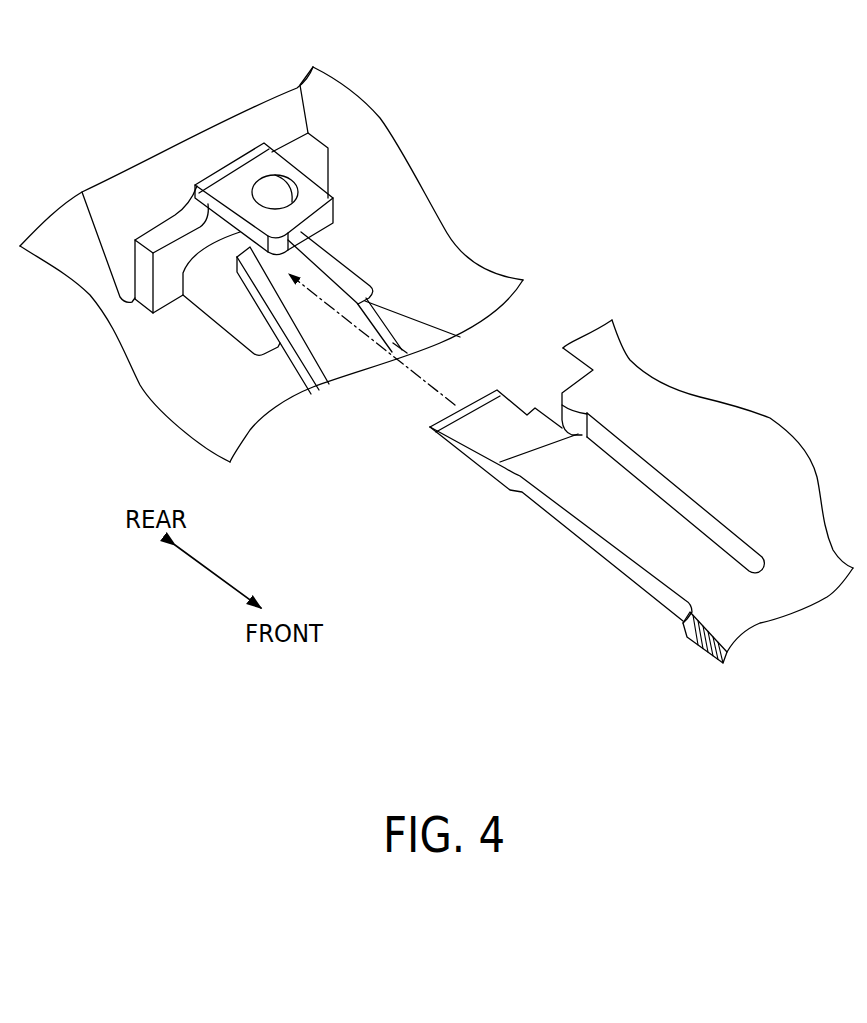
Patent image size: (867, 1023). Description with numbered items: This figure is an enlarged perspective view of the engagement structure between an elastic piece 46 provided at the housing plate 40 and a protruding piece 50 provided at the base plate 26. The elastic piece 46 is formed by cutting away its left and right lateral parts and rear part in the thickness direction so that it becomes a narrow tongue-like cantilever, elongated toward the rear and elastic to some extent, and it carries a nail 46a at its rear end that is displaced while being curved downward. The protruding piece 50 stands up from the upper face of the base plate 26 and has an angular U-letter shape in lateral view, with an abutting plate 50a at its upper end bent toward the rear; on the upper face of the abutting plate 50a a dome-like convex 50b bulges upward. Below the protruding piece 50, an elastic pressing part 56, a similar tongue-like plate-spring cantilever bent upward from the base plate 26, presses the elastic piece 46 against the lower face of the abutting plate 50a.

The base plate 26 is at (458, 268).
The housing plate 40 is at (680, 422).
The elastic piece 46 is at (550, 526).
The nail 46a is at (483, 430).
The protruding piece 50 is at (252, 137).
The abutting plate 50a is at (249, 168).
The dome-like convex 50b is at (274, 188).
The elastic pressing part 56 is at (267, 267).